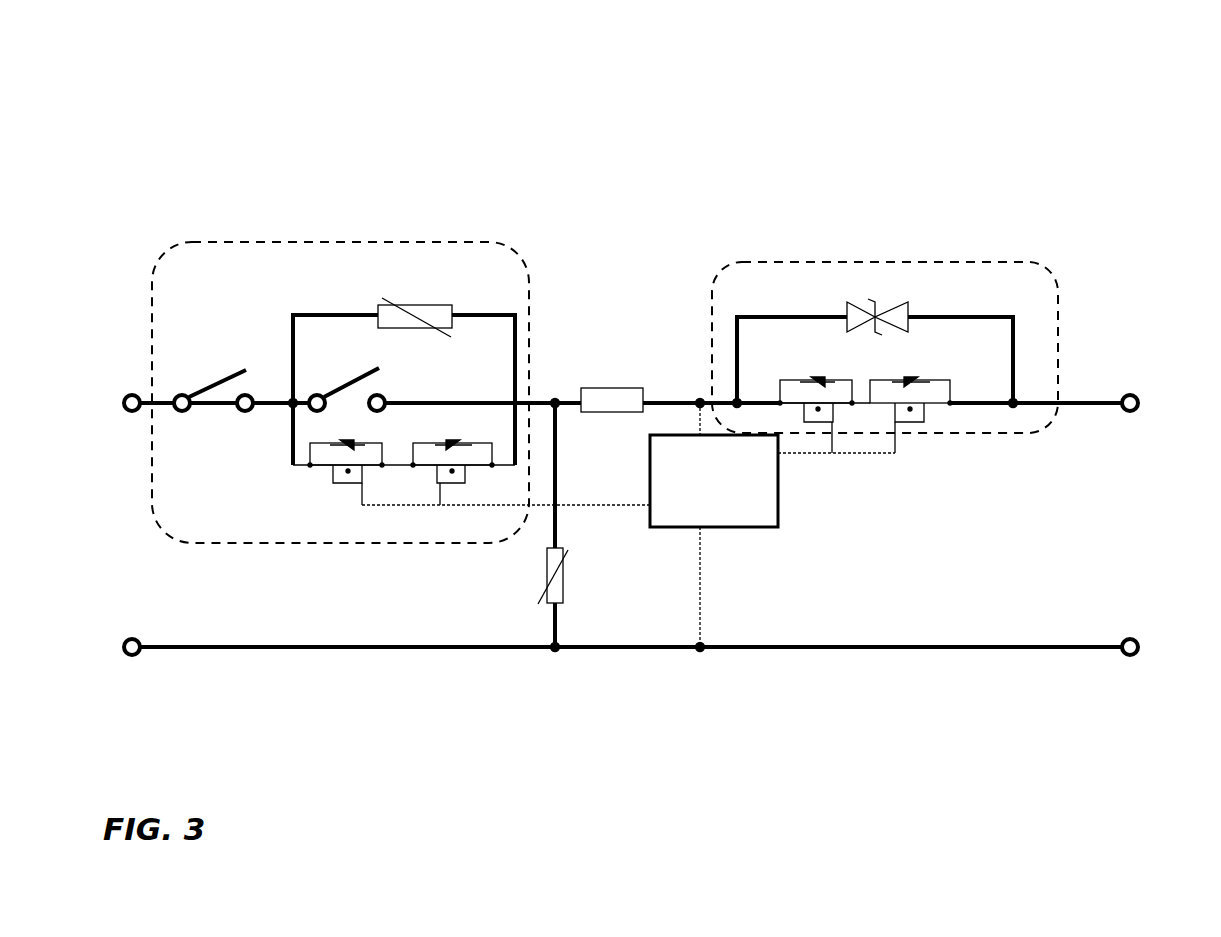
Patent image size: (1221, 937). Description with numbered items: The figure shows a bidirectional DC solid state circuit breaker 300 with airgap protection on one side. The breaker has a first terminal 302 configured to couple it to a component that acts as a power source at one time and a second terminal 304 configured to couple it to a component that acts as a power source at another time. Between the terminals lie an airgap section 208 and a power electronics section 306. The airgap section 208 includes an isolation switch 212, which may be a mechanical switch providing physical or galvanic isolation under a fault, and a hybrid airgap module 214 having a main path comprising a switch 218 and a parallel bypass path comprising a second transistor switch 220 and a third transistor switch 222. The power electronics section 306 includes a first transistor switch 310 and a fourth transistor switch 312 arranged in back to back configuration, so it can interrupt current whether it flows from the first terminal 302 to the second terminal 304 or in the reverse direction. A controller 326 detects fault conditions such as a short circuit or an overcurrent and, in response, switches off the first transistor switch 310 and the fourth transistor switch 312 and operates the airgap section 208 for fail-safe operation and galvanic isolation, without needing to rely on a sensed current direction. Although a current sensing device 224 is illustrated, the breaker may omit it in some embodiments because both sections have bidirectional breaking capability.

The bidirectional DC solid state circuit breaker 300 is at (787, 63).
The first terminal 302 is at (127, 393).
The second terminal 304 is at (1130, 388).
The airgap section 208 is at (197, 242).
The isolation switch SW1 212 is at (195, 405).
The hybrid airgap module 214 is at (340, 297).
The switch SW2 218 is at (320, 385).
The second transistor switch Q2 220 is at (370, 467).
The third transistor switch Q3 222 is at (478, 467).
The current sensing device 224 is at (593, 387).
The controller 326 is at (628, 525).
The power electronics section 306 is at (737, 262).
The first transistor switch Q1 310 is at (845, 397).
The fourth transistor switch Q4 312 is at (933, 397).